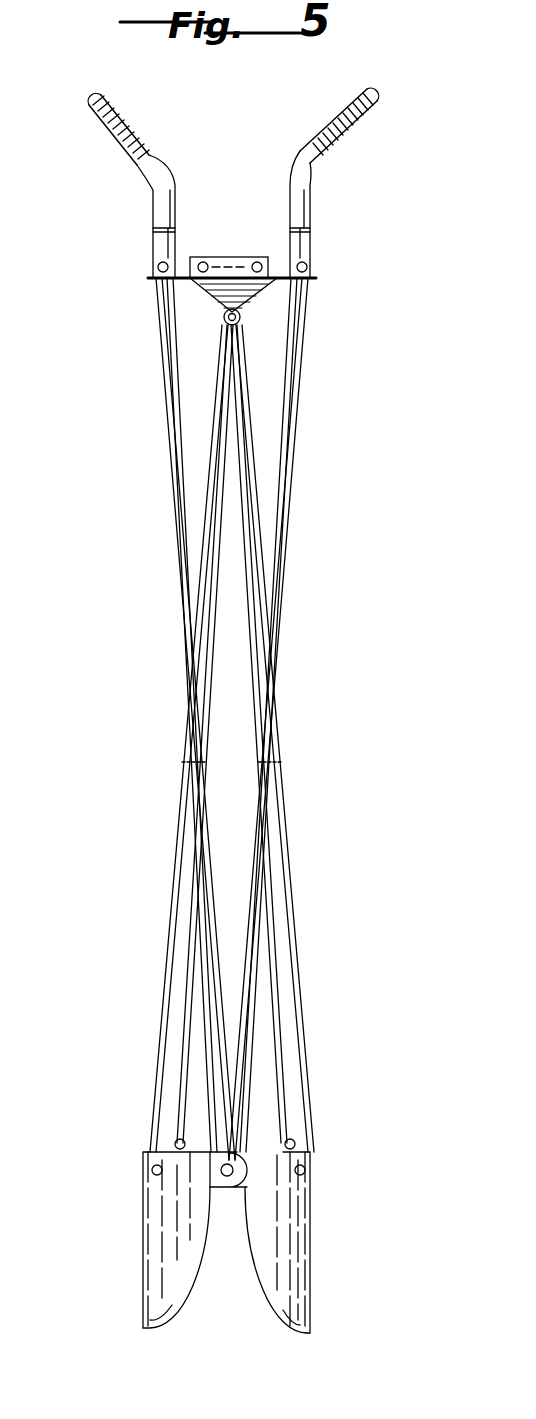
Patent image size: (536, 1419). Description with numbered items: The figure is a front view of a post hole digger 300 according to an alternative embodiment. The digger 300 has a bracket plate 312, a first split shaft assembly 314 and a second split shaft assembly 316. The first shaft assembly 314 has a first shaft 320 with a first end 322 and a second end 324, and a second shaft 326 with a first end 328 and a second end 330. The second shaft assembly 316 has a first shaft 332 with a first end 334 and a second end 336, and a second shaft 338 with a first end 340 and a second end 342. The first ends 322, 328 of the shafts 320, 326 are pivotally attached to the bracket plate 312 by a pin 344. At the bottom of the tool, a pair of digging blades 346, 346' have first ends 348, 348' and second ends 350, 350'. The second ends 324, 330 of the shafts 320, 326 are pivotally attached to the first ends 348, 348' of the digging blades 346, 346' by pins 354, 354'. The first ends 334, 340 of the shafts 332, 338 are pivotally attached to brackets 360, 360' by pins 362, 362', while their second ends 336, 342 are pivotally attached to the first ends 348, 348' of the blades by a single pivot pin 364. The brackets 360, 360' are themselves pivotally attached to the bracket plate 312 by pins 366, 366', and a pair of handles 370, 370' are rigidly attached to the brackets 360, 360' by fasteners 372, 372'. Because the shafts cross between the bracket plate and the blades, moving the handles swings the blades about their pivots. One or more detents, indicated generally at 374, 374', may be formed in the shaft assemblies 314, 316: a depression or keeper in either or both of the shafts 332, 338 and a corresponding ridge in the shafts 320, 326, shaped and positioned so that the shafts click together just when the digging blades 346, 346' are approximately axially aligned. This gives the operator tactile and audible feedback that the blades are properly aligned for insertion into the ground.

The post hole digger 300 is at (378, 410).
The bracket plate 312 is at (232, 256).
The first split shaft assembly 314 is at (258, 543).
The second split shaft assembly 316 is at (168, 490).
The first shaft 320 is at (203, 600).
The first end 322 is at (215, 368).
The second end 324 is at (153, 1142).
The second shaft 326 is at (266, 592).
The first end 328 is at (240, 344).
The second end 330 is at (300, 1130).
The first shaft 332 is at (165, 432).
The first end 334 is at (155, 295).
The second end 336 is at (212, 1094).
The second shaft 338 is at (290, 478).
The first end 340 is at (305, 297).
The second end 342 is at (250, 1078).
The pin 344 is at (226, 320).
The digging blade 346 is at (156, 1240).
The digging blade 346' is at (317, 1242).
The first end 348 is at (120, 1149).
The first end 348' is at (337, 1151).
The second end 350 is at (189, 1321).
The second end 350' is at (284, 1340).
The pin 354 is at (118, 1171).
The pin 354' is at (340, 1173).
The bracket 360 is at (129, 253).
The bracket 360' is at (339, 253).
The pin 362 is at (127, 269).
The pin 362' is at (339, 282).
The single pivot pin 364 is at (215, 1190).
The pin 366 is at (209, 248).
The pin 366' is at (274, 248).
The handle 370 is at (139, 157).
The handle 370' is at (324, 157).
The fastener 372 is at (133, 215).
The fastener 372' is at (337, 213).
The detent 374 is at (153, 754).
The detent 374' is at (305, 754).